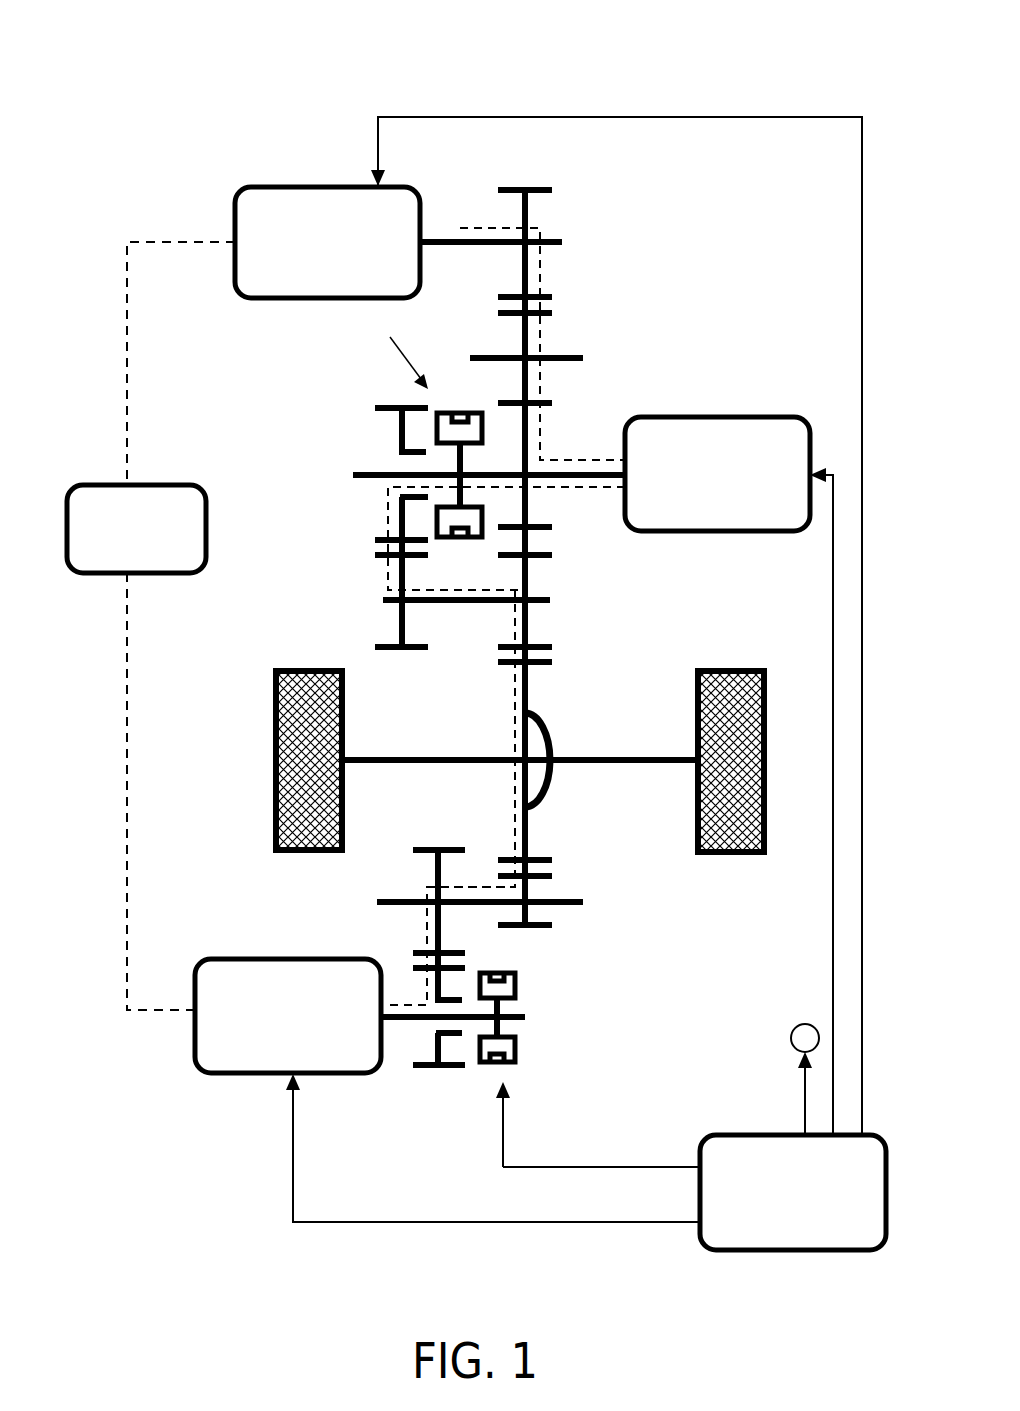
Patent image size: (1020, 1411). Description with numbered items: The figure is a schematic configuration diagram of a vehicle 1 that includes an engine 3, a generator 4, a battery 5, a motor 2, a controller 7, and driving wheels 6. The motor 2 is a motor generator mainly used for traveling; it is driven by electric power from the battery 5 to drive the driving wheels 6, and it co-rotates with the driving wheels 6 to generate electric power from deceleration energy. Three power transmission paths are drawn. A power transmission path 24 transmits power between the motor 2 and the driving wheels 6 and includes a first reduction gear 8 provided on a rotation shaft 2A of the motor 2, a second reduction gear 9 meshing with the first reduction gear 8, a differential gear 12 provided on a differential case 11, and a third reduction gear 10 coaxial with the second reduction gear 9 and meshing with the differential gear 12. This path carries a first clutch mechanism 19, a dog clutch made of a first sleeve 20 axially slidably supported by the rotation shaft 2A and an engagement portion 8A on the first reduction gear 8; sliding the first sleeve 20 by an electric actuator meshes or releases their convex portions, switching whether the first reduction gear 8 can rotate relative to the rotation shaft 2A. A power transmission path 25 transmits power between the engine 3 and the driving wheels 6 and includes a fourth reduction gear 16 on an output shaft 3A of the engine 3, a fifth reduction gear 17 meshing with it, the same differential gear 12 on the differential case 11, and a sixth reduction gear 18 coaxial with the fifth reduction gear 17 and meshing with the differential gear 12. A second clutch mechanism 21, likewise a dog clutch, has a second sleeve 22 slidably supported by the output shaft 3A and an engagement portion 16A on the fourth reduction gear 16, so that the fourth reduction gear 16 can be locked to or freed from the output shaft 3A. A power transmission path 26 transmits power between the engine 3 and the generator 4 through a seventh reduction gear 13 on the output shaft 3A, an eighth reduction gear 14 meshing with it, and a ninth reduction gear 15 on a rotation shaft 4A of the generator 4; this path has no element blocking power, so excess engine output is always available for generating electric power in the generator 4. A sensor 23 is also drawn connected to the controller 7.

The vehicle 1 is at (710, 86).
The motor 2 is at (268, 1075).
The rotation shaft 2A is at (520, 1020).
The engine 3 is at (742, 417).
The output shaft 3A is at (372, 473).
The generator 4 is at (293, 187).
The rotation shaft 4A is at (565, 241).
The battery 5 is at (168, 485).
The driving wheels 6 is at (310, 668).
The controller 7 is at (720, 1135).
The first reduction gear 8 is at (420, 1068).
The engagement portion 8A is at (455, 1052).
The second reduction gear 9 is at (433, 850).
The third reduction gear 10 is at (540, 926).
The differential case 11 is at (548, 738).
The differential gear 12 is at (530, 686).
The seventh reduction gear 13 is at (532, 453).
The eighth reduction gear 14 is at (530, 335).
The ninth reduction gear 15 is at (530, 214).
The fourth reduction gear 16 is at (390, 408).
The engagement portion 16A is at (422, 437).
The fifth reduction gear 17 is at (385, 602).
The sixth reduction gear 18 is at (530, 576).
The first clutch mechanism 19 is at (489, 1082).
The first sleeve 20 is at (517, 986).
The second clutch mechanism 21 is at (398, 350).
The second sleeve 22 is at (446, 411).
The sensor 23 is at (795, 1026).
The power transmission path 24 is at (427, 925).
The power transmission path 25 is at (385, 513).
The power transmission path 26 is at (460, 228).